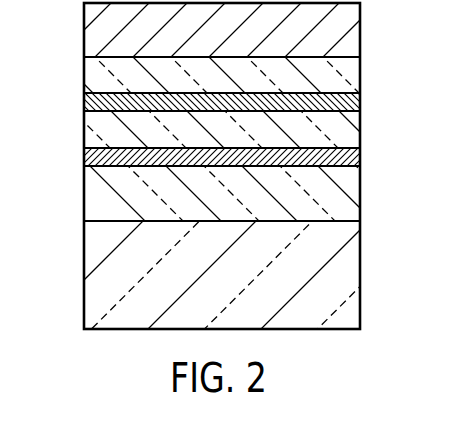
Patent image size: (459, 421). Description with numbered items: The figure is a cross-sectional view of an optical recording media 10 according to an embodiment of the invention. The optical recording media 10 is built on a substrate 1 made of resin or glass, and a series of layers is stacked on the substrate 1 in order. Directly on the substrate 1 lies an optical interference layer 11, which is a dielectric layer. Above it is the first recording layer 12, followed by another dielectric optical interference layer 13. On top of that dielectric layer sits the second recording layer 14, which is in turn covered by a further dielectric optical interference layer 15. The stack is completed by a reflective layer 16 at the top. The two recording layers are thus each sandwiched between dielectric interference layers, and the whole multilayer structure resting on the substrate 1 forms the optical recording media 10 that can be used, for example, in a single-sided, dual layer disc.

The substrate 1 is at (361, 270).
The optical recording media 10 is at (77, 224).
The optical interference layer 11 is at (361, 190).
The first recording layer 12 is at (361, 154).
The optical interference layer 13 is at (361, 130).
The second recording layer 14 is at (361, 100).
The optical interference layer 15 is at (361, 73).
The reflective layer 16 is at (361, 28).